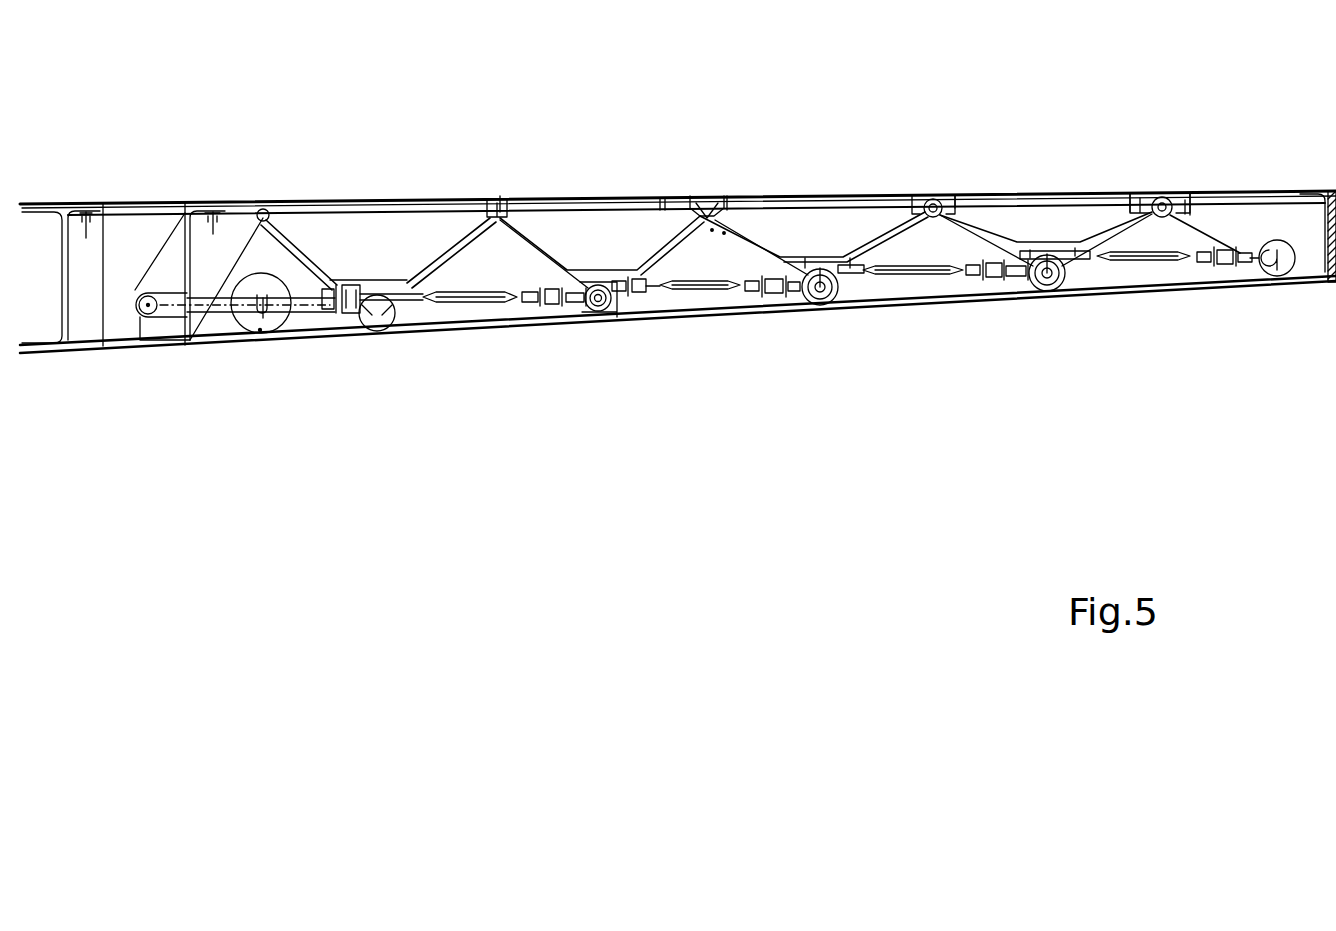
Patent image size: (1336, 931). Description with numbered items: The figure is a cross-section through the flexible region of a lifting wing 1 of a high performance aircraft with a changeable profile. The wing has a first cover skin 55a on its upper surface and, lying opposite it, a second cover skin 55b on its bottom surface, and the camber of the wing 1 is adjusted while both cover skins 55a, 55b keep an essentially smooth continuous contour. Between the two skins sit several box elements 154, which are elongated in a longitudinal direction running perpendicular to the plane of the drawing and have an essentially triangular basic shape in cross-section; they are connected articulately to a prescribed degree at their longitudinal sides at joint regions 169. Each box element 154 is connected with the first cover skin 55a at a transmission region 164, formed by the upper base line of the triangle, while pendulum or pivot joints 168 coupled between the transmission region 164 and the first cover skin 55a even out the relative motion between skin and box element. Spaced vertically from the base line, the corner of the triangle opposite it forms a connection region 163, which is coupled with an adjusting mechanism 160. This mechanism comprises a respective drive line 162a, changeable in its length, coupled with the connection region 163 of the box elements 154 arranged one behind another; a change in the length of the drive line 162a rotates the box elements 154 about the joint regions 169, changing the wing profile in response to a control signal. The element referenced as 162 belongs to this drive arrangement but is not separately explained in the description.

The lifting wing 1 is at (658, 552).
The first cover skin 55a is at (1080, 193).
The second cover skin 55b is at (973, 302).
The box elements 154 is at (402, 242).
The adjusting mechanism 160 is at (710, 333).
The push rod 162 is at (693, 290).
The drive line 162a is at (1153, 258).
The connection region 163 is at (375, 230).
The transmission region 164 is at (333, 200).
The pivot joints 168 is at (933, 197).
The joint regions 169 is at (707, 213).